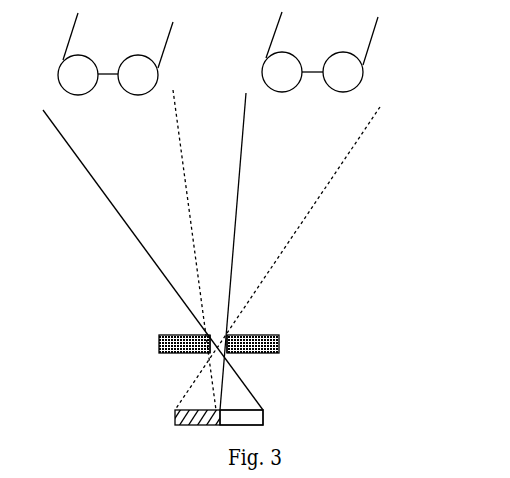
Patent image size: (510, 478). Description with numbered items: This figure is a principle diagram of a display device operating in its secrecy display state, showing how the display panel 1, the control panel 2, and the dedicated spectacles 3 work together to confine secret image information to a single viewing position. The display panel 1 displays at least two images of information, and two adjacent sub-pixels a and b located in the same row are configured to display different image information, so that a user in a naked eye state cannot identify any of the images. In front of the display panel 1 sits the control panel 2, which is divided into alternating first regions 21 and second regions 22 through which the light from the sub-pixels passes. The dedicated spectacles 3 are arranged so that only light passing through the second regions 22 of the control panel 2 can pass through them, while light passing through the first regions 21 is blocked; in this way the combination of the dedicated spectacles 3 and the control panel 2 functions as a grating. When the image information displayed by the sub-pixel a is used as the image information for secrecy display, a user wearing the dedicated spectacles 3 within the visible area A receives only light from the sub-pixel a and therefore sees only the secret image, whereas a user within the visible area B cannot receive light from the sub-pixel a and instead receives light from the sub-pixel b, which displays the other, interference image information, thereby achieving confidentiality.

The display panel 1 is at (296, 389).
The sub-pixel a is at (218, 410).
The sub-pixel b is at (257, 418).
The control panel 2 is at (287, 311).
The first regions 21 is at (277, 334).
The second regions 22 is at (220, 334).
The dedicated spectacles 3 is at (368, 76).
The visible area A is at (338, 167).
The visible area B is at (175, 125).